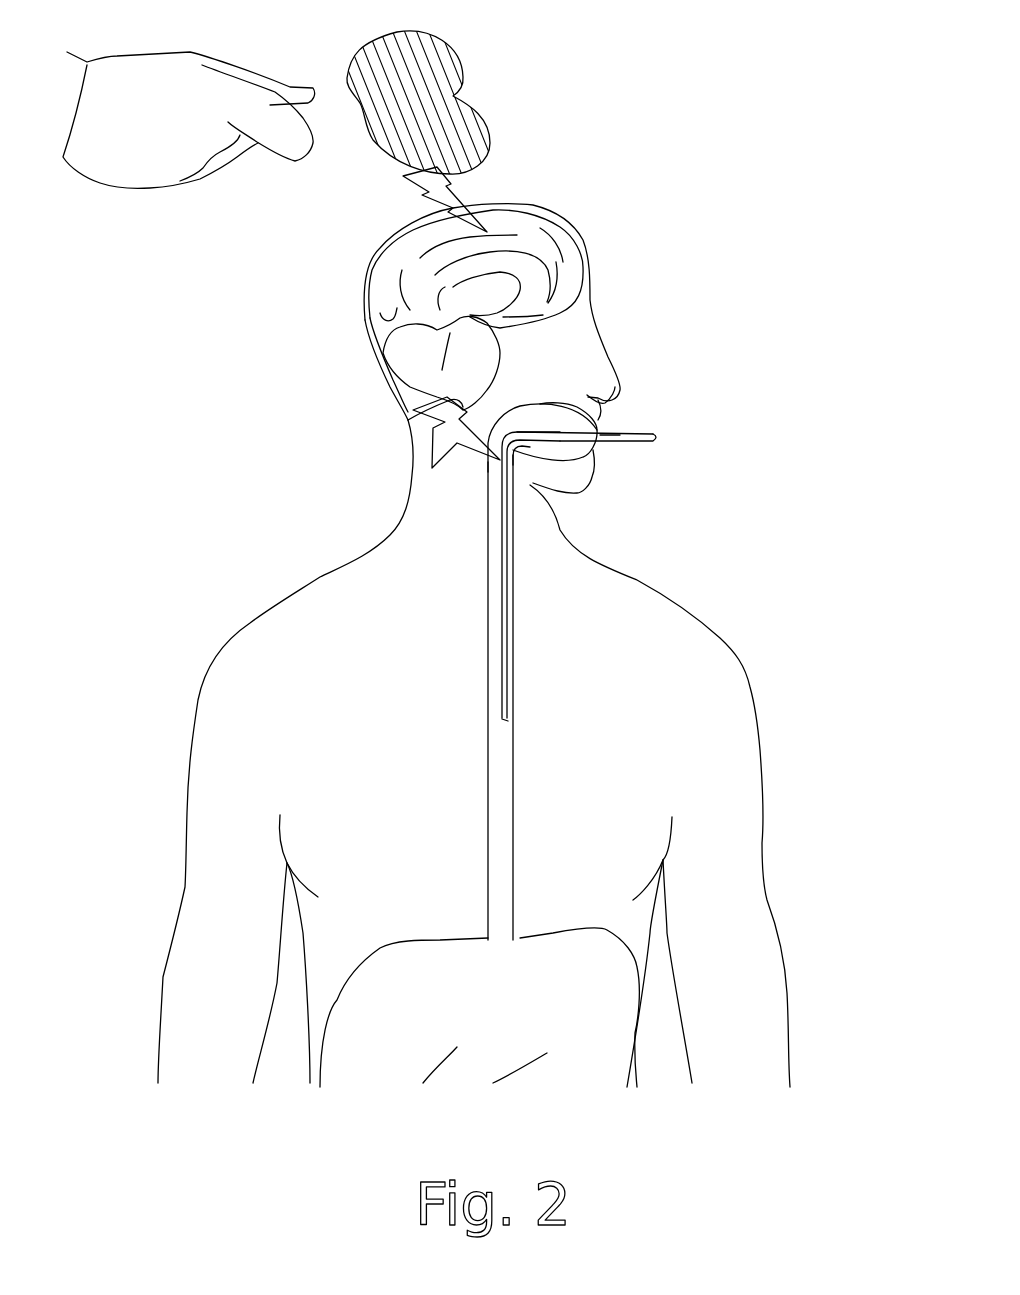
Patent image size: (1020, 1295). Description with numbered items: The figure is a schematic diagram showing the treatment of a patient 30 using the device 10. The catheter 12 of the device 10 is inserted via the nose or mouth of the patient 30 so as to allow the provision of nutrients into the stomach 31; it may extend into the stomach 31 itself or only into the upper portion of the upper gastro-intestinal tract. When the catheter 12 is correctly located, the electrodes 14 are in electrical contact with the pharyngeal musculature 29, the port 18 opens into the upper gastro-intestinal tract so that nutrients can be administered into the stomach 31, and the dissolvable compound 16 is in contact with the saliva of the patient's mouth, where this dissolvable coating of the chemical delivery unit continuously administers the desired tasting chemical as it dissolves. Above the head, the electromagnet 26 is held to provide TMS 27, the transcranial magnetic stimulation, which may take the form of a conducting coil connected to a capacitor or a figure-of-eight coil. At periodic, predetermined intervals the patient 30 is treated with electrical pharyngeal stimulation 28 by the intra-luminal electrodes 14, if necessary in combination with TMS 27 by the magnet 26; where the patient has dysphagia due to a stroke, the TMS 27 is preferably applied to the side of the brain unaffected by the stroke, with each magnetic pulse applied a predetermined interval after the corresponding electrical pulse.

The device 10 is at (653, 438).
The catheter 12 is at (515, 618).
The electrodes 14 is at (513, 465).
The dissolvable compound 16 is at (563, 432).
The port 18 is at (513, 722).
The electromagnet 26 is at (458, 98).
The TMS 27 is at (467, 193).
The electrical pharyngeal stimulation 28 is at (420, 420).
The pharyngeal musculature 29 is at (498, 462).
The patient 30 is at (765, 788).
The stomach 31 is at (628, 985).